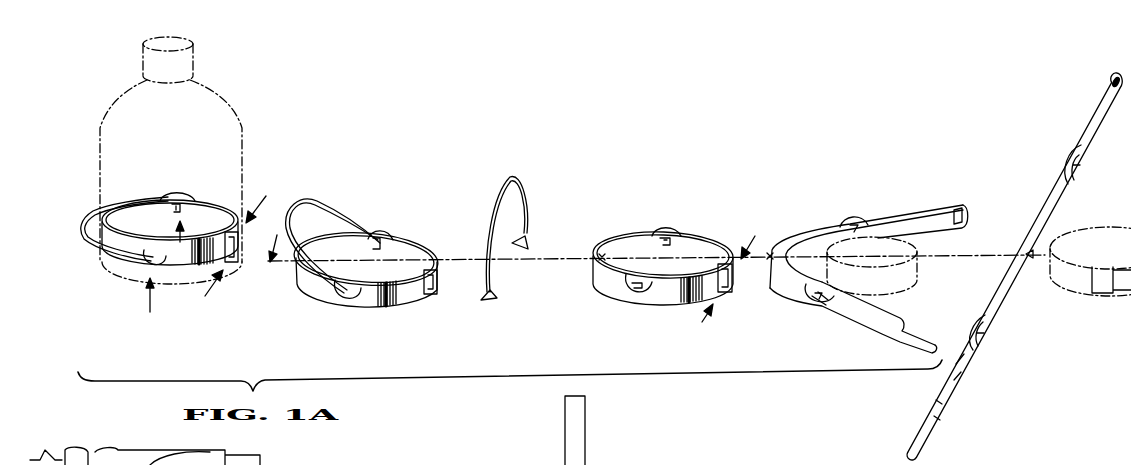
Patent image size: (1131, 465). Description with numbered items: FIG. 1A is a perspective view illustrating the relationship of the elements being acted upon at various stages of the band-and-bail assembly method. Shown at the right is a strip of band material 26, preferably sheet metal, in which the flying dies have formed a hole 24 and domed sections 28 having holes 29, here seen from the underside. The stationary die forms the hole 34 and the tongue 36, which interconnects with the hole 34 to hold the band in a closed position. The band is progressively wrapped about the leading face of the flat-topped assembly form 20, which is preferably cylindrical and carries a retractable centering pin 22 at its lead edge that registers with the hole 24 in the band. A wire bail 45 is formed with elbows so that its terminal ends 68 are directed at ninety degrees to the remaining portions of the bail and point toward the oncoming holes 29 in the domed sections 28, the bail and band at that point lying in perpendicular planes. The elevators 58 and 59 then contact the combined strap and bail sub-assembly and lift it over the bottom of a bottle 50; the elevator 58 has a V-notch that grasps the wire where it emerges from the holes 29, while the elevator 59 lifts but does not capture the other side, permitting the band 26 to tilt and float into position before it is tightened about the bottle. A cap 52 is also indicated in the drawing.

The assembly form 20 is at (905, 250).
The retractable centering pin 22 is at (1044, 256).
The hole 24 is at (1034, 254).
The band material 26 is at (198, 214).
The domed section 28 is at (824, 307).
The hole 29 is at (670, 240).
The hole 34 is at (1108, 90).
The tongue 36 is at (235, 266).
The wire bail 45 is at (318, 212).
The bottle 50 is at (243, 134).
The cap 52 is at (128, 457).
The elevator 58 is at (148, 304).
The elevator 59 is at (175, 236).
The terminal end 68 is at (379, 240).